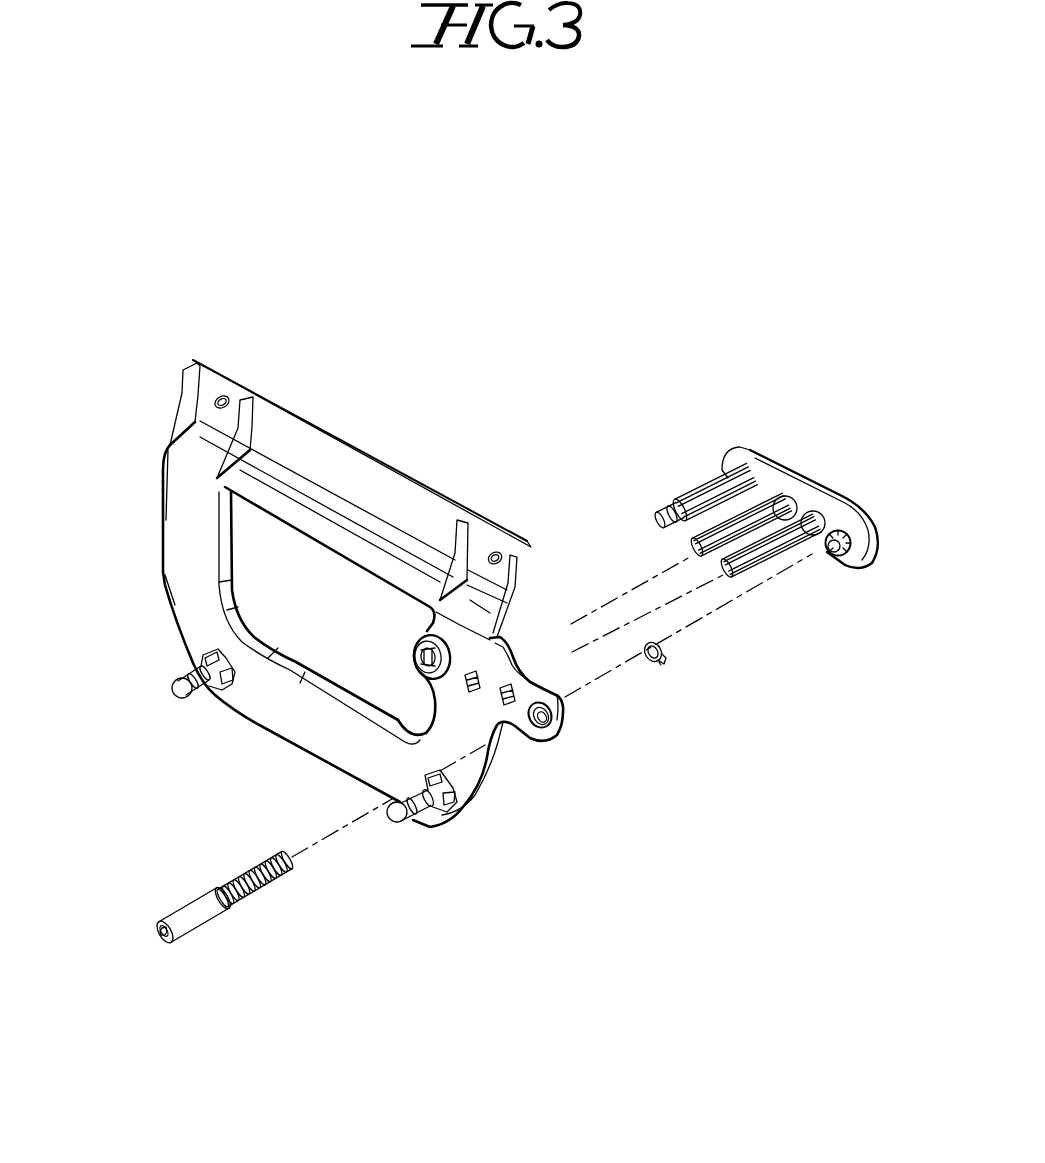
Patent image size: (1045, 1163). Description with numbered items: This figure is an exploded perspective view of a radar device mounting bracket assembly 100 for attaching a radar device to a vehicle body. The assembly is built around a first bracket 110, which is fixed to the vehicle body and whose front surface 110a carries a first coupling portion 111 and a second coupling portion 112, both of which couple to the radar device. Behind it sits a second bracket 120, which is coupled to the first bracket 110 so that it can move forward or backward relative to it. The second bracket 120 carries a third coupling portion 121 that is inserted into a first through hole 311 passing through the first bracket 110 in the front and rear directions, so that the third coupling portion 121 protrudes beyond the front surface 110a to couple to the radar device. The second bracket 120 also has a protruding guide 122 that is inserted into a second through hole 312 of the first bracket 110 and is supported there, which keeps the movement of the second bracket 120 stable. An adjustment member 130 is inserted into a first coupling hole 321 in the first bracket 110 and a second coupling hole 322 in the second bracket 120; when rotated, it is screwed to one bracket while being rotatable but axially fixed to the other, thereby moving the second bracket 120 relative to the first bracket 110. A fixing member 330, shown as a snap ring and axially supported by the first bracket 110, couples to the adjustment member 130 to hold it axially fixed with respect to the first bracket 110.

The radar device mounting bracket assembly 100 is at (428, 210).
The first bracket 110 is at (272, 385).
The front surface 110a is at (175, 503).
The first coupling portion 111 is at (172, 686).
The second coupling portion 112 is at (408, 826).
The second bracket 120 is at (846, 483).
The third coupling portion 121 is at (710, 477).
The guide 122 is at (790, 500).
The adjustment member 130 is at (218, 939).
The first through hole 311 is at (412, 662).
The second through hole 312 is at (505, 688).
The first coupling hole 321 is at (543, 738).
The second coupling hole 322 is at (834, 572).
The fixing member 330 is at (665, 663).